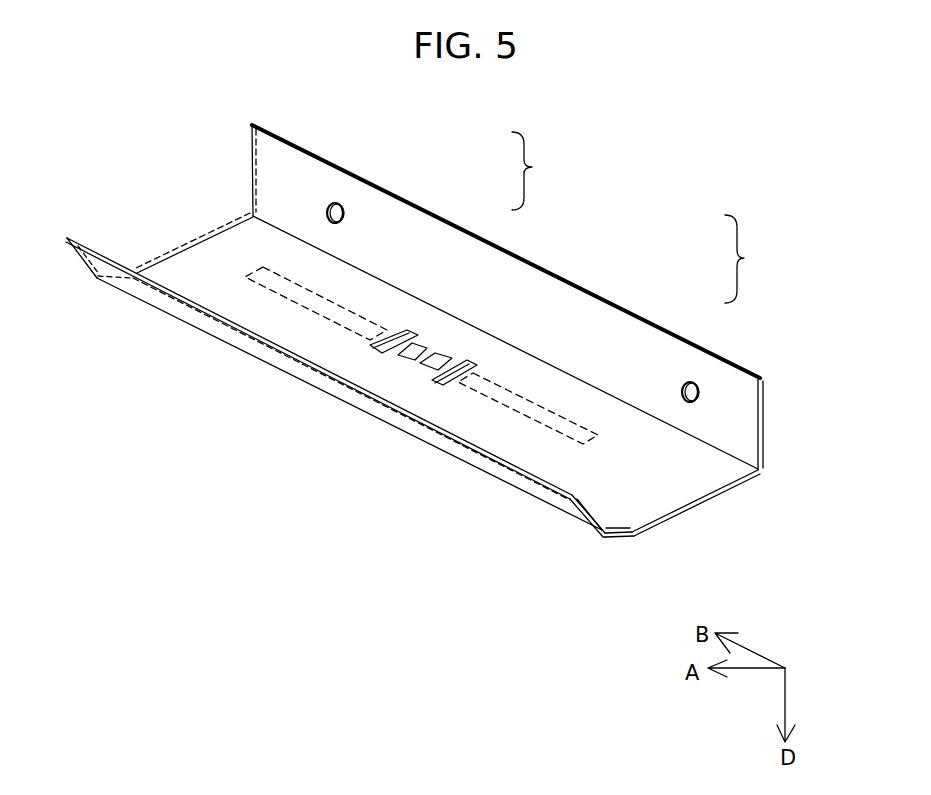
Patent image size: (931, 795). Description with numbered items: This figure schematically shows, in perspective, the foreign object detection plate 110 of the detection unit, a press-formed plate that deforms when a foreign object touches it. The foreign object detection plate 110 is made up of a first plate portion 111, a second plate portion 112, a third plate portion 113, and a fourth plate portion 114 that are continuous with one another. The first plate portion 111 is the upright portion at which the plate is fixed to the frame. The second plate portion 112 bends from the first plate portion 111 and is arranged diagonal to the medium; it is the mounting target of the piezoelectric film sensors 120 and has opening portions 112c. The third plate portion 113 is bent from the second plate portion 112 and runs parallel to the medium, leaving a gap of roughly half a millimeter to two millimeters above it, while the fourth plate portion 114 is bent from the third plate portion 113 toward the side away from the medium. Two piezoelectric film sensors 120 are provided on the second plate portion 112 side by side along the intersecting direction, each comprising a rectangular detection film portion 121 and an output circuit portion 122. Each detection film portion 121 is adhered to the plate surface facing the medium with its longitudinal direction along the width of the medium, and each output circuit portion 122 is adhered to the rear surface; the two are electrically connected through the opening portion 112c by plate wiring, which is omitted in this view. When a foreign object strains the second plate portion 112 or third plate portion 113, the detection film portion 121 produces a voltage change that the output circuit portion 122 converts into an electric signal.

The foreign object detection plate 110 is at (707, 160).
The first plate portion 111 is at (740, 403).
The second plate portion 112 is at (668, 502).
The opening portion 112c is at (430, 380).
The third plate portion 113 is at (607, 520).
The fourth plate portion 114 is at (565, 505).
The piezoelectric film sensor 120 is at (651, 217).
The detection film portion 121 is at (310, 299).
The output circuit portion 122 is at (415, 352).